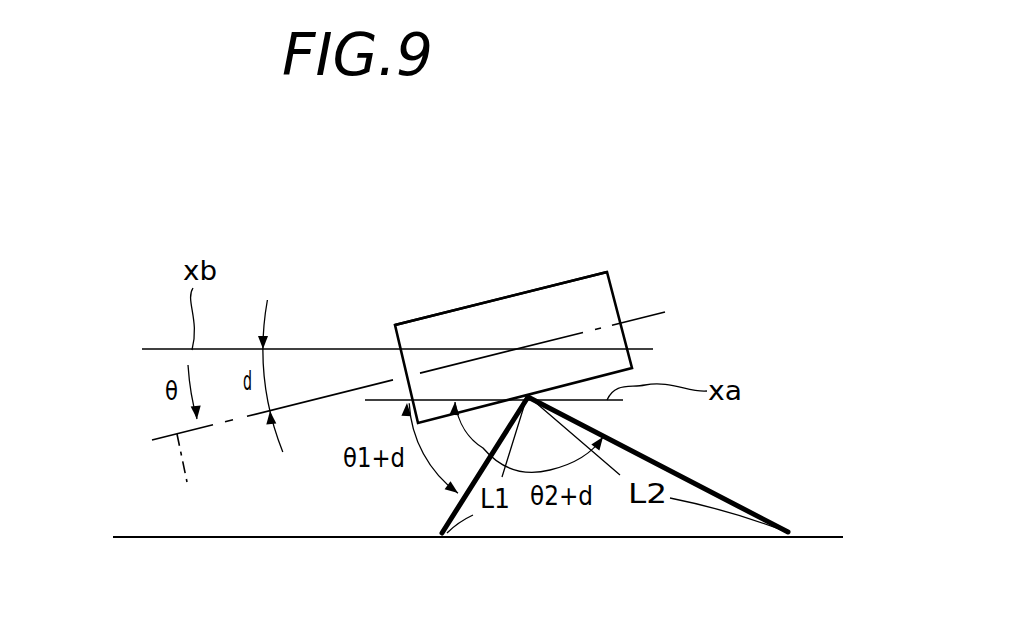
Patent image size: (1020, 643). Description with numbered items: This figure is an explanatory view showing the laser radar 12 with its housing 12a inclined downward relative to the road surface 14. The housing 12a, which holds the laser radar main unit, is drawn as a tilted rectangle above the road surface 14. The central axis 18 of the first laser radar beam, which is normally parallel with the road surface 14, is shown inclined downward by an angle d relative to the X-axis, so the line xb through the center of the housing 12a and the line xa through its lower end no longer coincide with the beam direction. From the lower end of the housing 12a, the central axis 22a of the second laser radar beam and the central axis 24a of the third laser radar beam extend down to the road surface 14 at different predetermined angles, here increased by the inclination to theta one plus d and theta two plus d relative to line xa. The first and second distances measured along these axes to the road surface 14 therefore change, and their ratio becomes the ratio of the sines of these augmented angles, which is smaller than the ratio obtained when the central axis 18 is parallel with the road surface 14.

The laser radar 12 is at (507, 297).
The housing 12a is at (582, 277).
The road surface 14 is at (138, 537).
The central axis of the laser beam 18 is at (182, 476).
The central axis of the laser beam of the second laser radar 22a is at (452, 515).
The central axis of the laser beam of the third laser radar 24a is at (693, 479).